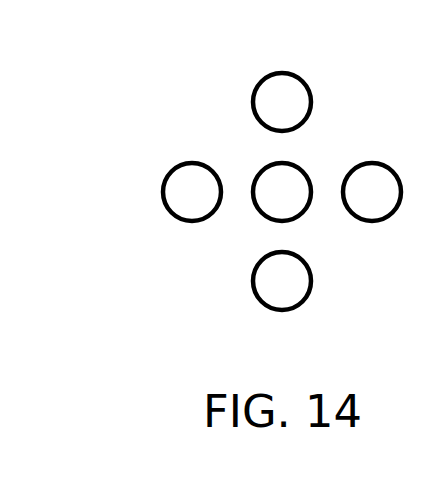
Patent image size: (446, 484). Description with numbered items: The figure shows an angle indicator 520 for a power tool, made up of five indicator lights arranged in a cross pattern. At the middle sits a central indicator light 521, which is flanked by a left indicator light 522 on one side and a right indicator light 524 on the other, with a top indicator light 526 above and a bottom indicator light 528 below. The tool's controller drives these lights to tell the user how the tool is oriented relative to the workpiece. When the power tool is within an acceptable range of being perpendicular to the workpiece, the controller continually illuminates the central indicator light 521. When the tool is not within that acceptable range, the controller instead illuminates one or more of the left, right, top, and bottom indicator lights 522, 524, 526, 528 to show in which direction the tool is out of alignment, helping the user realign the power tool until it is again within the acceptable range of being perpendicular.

The angle indicator 520 is at (118, 55).
The central indicator light 521 is at (263, 169).
The left indicator light 522 is at (167, 191).
The right indicator light 524 is at (385, 210).
The top indicator light 526 is at (259, 81).
The bottom indicator light 528 is at (259, 289).